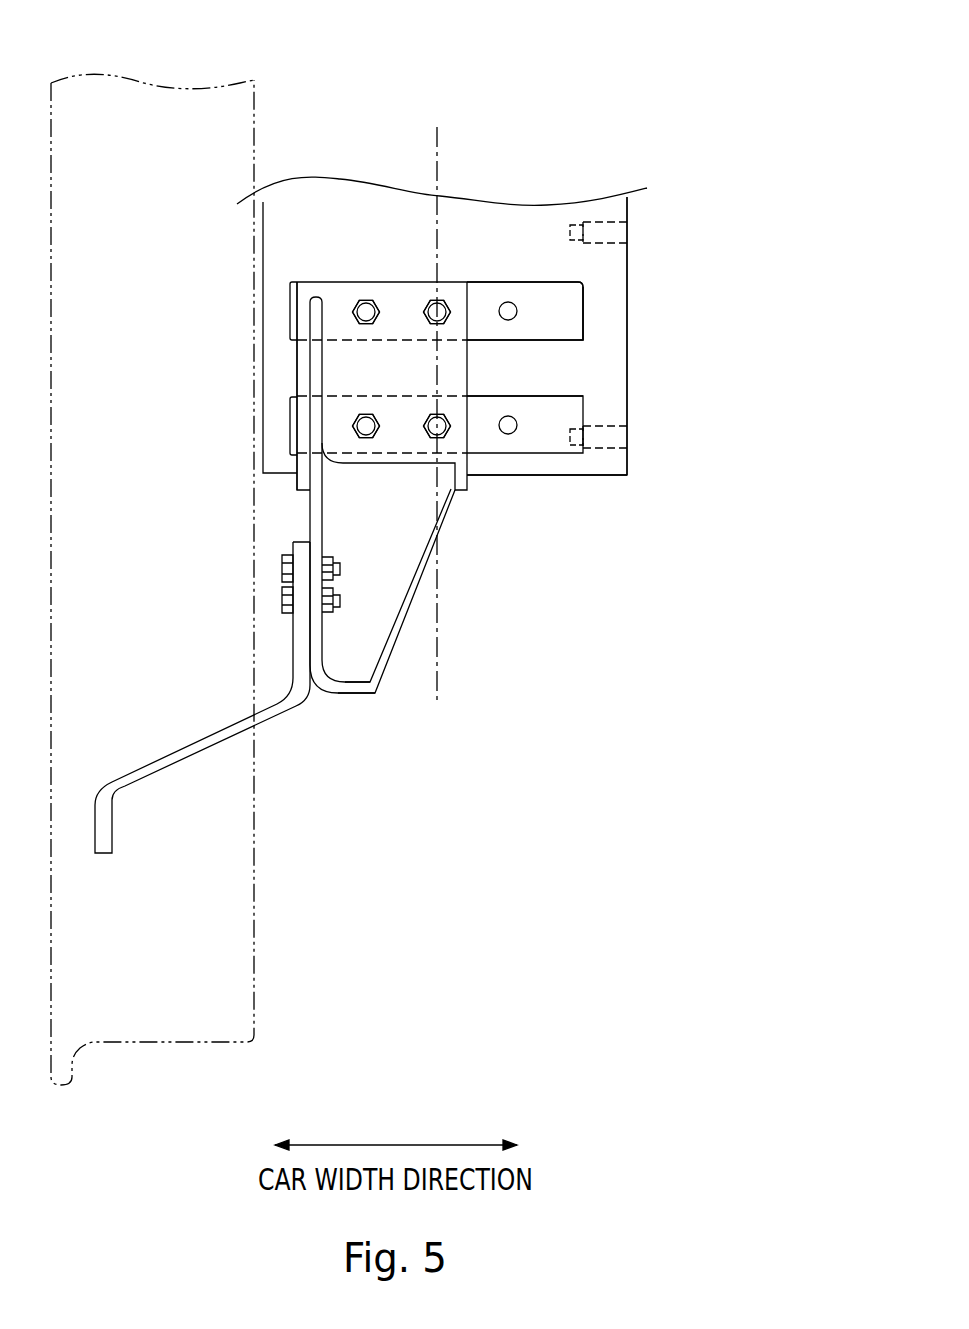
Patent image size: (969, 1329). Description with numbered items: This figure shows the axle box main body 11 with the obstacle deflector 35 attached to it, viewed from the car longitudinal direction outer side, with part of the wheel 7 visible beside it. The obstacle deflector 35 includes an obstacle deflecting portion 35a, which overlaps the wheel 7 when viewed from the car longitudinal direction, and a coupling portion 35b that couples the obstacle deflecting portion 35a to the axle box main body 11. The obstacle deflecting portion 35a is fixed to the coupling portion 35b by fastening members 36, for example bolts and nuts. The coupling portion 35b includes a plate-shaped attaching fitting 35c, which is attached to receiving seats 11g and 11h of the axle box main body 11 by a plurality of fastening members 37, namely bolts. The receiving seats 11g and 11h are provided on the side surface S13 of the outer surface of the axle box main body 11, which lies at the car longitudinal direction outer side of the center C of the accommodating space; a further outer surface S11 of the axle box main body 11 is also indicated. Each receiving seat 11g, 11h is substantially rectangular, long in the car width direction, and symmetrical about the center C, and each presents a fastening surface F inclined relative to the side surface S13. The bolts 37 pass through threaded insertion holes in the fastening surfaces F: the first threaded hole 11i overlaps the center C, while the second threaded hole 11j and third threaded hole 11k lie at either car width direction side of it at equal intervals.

The wheel 7 is at (255, 103).
The center of the accommodating space C is at (440, 143).
The axle box main body 11 is at (478, 373).
The receiving seat 11g is at (573, 328).
The receiving seat 11h is at (507, 458).
The first threaded hole 11i is at (453, 305).
The second threaded hole 11j is at (390, 308).
The third threaded hole 11k is at (508, 302).
The side surface S11 is at (628, 315).
The side surface S13 is at (575, 458).
The fastening surface F is at (577, 290).
The fastening members 37 is at (440, 418).
The obstacle deflector 35 is at (275, 585).
The obstacle deflecting portion 35a is at (277, 712).
The coupling portion 35b is at (360, 690).
The attaching fitting 35c is at (303, 293).
The fastening members 36 is at (283, 572).